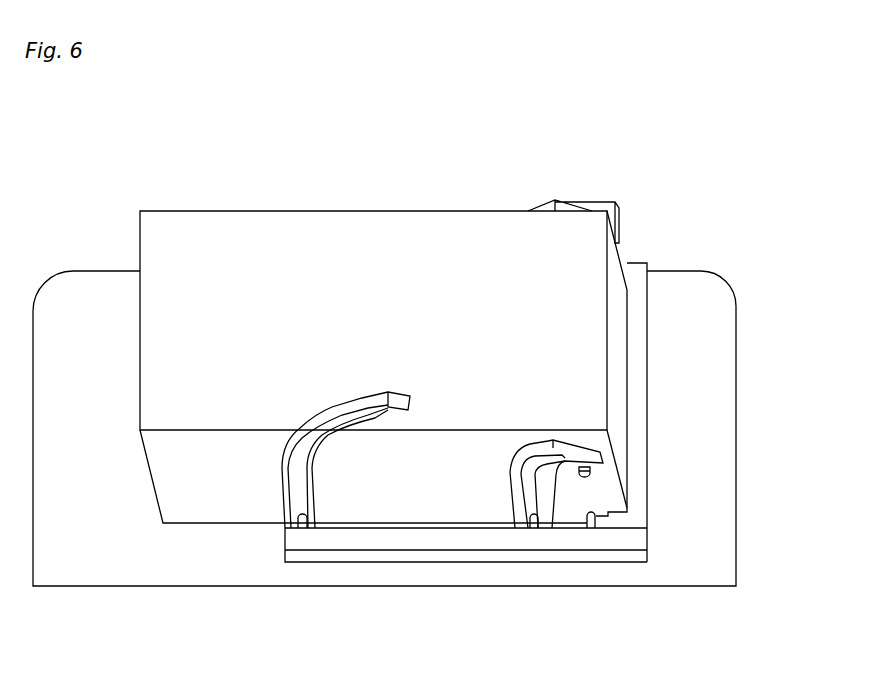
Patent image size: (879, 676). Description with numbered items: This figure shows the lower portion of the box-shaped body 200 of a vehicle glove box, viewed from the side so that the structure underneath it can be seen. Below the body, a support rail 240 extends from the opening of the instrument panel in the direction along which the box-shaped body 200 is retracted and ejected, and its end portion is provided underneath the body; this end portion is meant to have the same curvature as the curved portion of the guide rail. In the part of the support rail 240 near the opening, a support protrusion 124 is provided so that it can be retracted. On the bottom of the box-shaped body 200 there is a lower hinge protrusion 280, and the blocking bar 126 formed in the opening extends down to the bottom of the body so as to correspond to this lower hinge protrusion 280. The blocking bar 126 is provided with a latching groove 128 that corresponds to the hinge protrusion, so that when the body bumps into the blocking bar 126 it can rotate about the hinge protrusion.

The box-shaped body 200 is at (437, 199).
The blocking bar 126 is at (638, 420).
The lower hinge protrusion 280 is at (590, 475).
The latching groove 128 is at (603, 523).
The support rail 240 is at (285, 492).
The support protrusion 124 is at (303, 525).